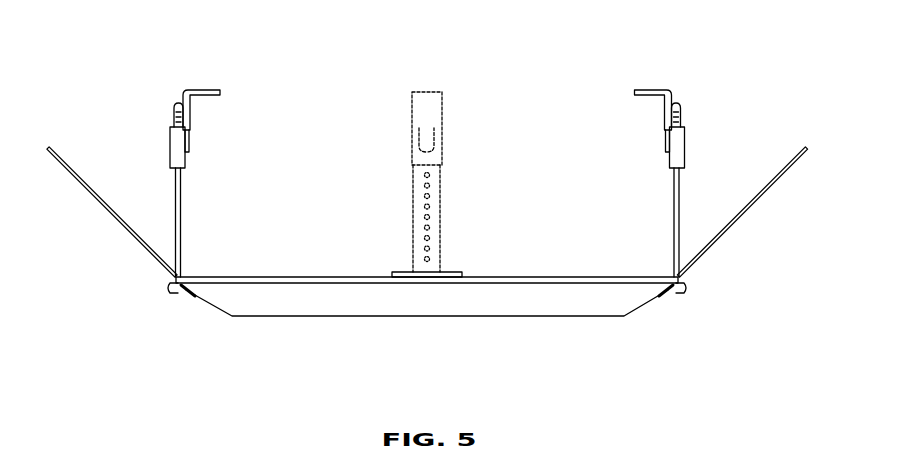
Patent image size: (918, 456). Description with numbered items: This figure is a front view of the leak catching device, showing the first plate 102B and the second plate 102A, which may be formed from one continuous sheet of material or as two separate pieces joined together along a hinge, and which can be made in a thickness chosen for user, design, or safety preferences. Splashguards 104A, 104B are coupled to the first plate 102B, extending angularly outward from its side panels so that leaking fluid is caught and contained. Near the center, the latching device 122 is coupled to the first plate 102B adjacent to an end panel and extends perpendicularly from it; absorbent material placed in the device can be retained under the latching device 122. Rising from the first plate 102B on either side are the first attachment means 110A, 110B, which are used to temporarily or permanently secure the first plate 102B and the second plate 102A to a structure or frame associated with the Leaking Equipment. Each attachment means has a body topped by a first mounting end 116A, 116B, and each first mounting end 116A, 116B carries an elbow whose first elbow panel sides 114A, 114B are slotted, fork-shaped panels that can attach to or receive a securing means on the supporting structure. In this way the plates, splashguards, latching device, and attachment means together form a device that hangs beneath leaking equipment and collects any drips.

The second plate 102A is at (543, 280).
The first plate 102B is at (267, 317).
The splashguard 104A is at (739, 218).
The splashguard 104B is at (115, 218).
The first attachment means 110A is at (685, 106).
The first attachment means 110B is at (170, 106).
The first elbow panel side 114A is at (653, 89).
The first elbow panel side 114B is at (203, 89).
The first mounting end 116A is at (682, 147).
The first mounting end 116B is at (175, 147).
The latching device 122 is at (406, 272).